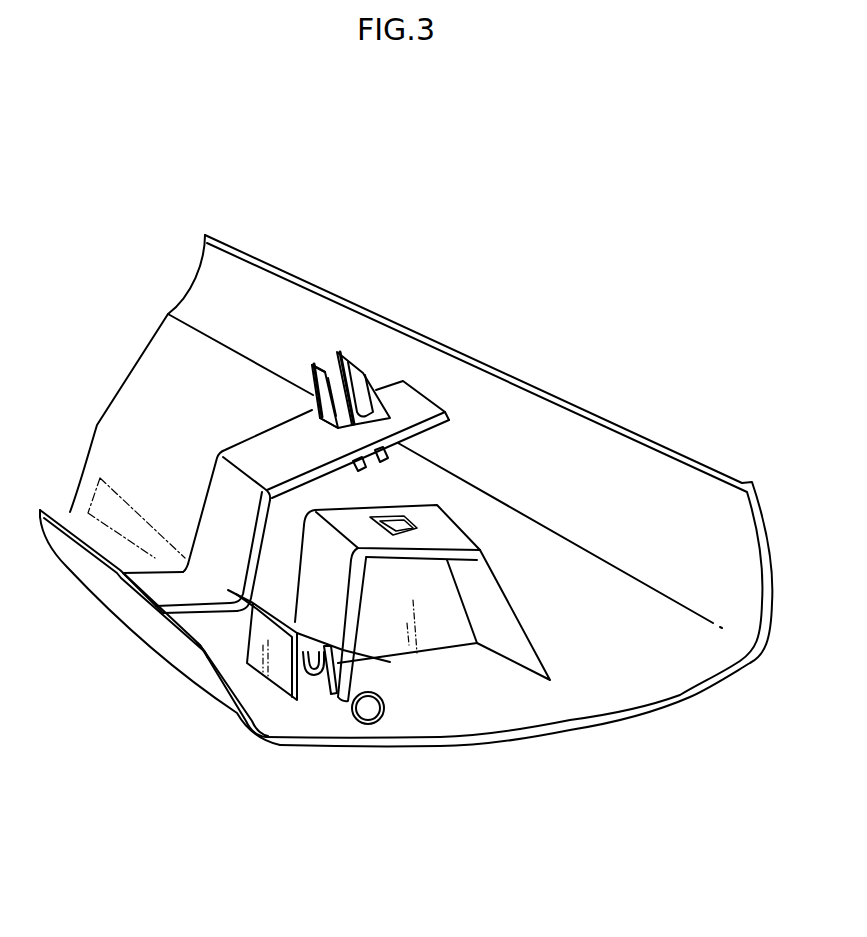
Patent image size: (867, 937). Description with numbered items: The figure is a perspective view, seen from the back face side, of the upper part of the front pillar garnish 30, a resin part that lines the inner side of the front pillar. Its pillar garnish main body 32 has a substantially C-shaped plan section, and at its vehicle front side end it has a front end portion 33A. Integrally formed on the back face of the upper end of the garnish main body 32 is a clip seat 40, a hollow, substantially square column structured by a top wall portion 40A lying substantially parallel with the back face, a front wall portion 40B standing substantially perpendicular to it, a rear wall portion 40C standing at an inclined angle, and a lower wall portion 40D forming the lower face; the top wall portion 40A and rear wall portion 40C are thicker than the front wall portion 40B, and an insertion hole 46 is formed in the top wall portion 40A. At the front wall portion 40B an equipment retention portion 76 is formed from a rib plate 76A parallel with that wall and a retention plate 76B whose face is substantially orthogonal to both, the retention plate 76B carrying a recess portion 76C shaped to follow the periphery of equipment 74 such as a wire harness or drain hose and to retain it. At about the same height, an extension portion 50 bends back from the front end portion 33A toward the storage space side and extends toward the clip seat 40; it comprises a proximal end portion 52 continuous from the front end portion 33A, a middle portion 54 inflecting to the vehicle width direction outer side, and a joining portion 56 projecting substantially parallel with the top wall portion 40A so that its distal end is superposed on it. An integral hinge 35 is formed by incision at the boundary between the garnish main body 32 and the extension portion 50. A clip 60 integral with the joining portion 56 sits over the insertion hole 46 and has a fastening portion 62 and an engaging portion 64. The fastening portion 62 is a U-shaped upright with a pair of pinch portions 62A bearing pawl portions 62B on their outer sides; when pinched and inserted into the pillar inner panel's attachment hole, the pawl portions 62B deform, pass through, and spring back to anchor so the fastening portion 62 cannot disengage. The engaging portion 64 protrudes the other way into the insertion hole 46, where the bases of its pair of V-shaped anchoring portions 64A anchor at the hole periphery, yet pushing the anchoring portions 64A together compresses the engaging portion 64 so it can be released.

The front pillar garnish 30 is at (558, 278).
The pillar garnish main body 32 is at (156, 627).
The front end portion 33A is at (143, 597).
The integral hinge 35 is at (180, 642).
The clip seat 40 is at (458, 592).
The top wall portion 40A is at (443, 537).
The front wall portion 40B is at (324, 582).
The rear wall portion 40C is at (540, 633).
The lower wall portion 40D is at (450, 637).
The insertion hole 46 is at (410, 523).
The extension portion 50 is at (247, 460).
The proximal end portion 52 is at (165, 588).
The middle portion 54 is at (222, 512).
The joining portion 56 is at (297, 423).
The clip 60 is at (357, 363).
The fastening portion 62 is at (357, 381).
The pinch portions 62A is at (330, 355).
The pawl portions 62B is at (342, 430).
The engaging portion 64 is at (419, 469).
The anchoring portions 64A is at (358, 471).
The equipment 74 is at (383, 678).
The equipment retention portion 76 is at (287, 719).
The rib plate 76A is at (280, 680).
The retention plate 76B is at (312, 683).
The recess portion 76C is at (344, 724).